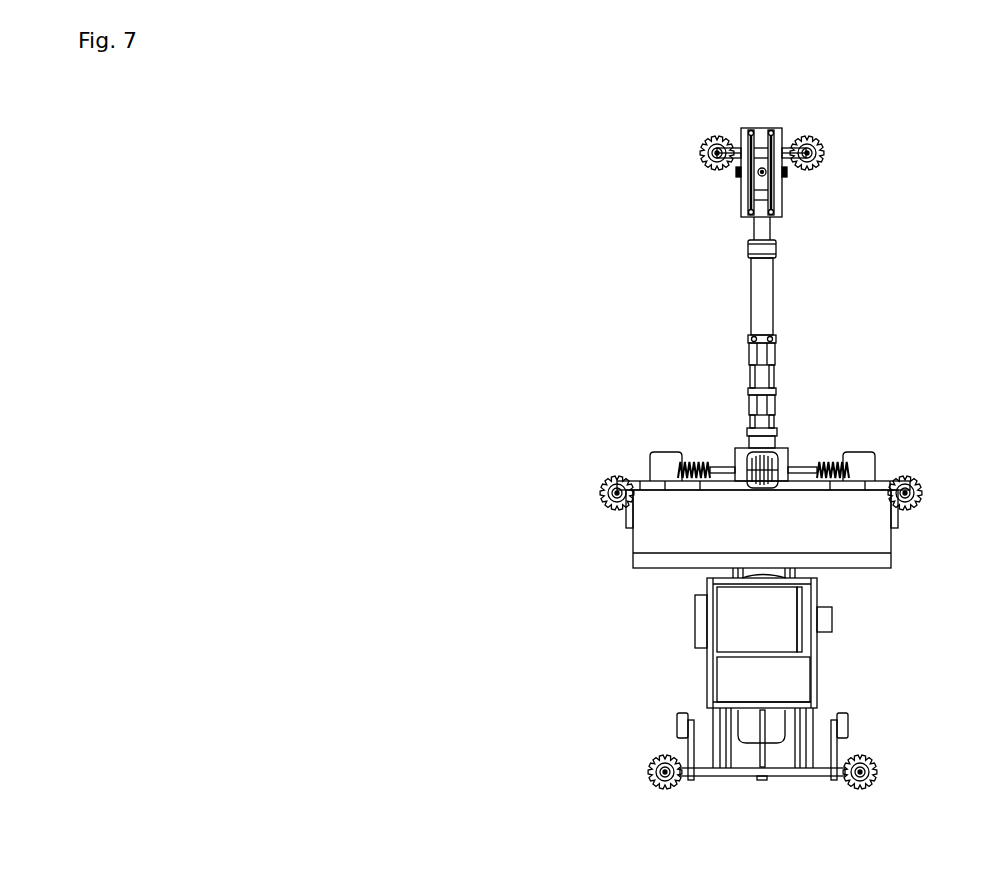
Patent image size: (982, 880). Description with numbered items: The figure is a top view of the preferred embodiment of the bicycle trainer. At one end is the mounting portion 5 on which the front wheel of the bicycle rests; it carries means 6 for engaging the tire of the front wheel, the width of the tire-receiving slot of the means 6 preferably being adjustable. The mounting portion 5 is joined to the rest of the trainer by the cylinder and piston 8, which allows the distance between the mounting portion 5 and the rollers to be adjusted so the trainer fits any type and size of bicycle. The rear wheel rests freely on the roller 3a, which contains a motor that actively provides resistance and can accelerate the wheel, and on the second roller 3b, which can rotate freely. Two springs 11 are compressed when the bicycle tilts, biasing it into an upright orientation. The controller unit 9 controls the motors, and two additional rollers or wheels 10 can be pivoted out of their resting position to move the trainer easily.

The mounting portion 5 is at (796, 161).
The means for engaging the tire 6 is at (760, 139).
The cylinder and piston 8 is at (760, 297).
The controller unit 9 is at (890, 545).
The springs 11 is at (697, 463).
The roller 3a is at (759, 619).
The second roller 3b is at (763, 679).
The rollers or wheels 10 is at (683, 724).